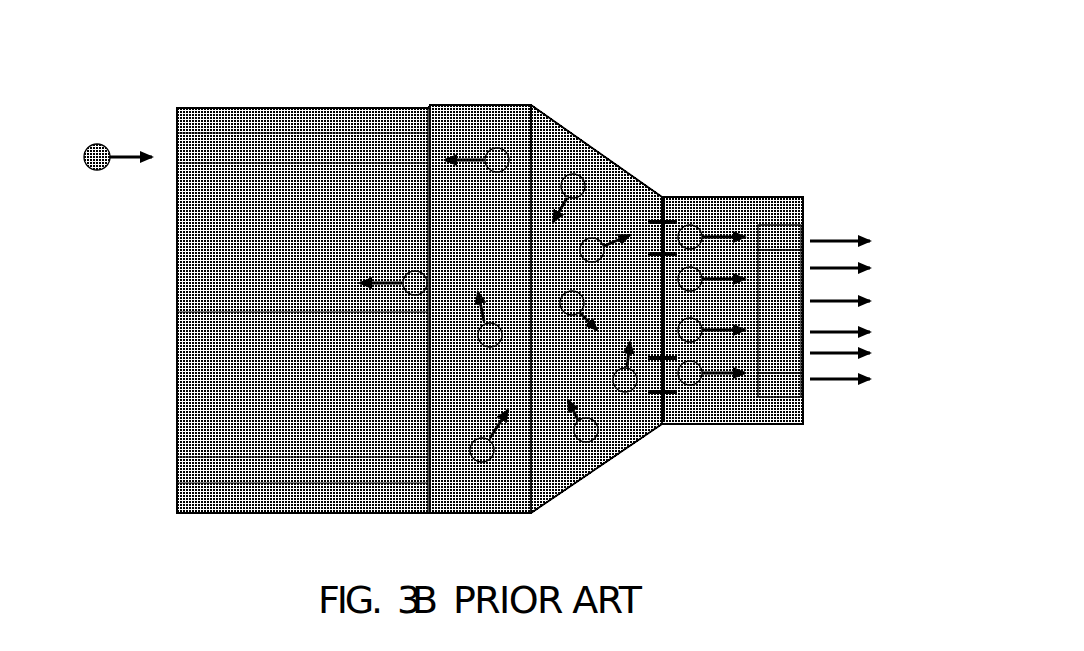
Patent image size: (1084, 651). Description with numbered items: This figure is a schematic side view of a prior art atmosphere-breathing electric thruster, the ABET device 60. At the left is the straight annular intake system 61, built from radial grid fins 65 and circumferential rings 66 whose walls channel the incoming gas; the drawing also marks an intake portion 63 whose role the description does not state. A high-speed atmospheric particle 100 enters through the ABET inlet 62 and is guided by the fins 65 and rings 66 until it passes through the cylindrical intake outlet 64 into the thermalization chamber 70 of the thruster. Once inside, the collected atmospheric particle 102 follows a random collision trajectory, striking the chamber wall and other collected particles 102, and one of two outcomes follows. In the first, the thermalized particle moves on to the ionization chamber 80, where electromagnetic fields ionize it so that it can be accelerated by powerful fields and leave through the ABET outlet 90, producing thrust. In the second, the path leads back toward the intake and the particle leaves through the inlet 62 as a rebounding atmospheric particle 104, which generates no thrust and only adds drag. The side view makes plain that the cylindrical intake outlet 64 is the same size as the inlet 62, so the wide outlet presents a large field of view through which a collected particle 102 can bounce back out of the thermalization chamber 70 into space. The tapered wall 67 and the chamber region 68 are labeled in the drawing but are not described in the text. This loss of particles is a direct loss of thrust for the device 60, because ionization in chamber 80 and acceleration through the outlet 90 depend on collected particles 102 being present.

The ABET device 60 is at (931, 62).
The straight annular intake system 61 is at (316, 294).
The ABET inlet 62 is at (175, 262).
The chamber wall 63 is at (262, 108).
The cylindrical intake outlet 64 is at (428, 402).
The radial grid fins 65 is at (375, 205).
The circumferential rings 66 is at (440, 152).
The tapered wall 67 is at (662, 424).
The acceleration chamber 68 is at (690, 410).
The thermalization chamber 70 is at (647, 177).
The ionization chamber 80 is at (738, 197).
The ABET outlet 90 is at (810, 237).
The high-speed atmospheric particle 100 is at (93, 143).
The collected atmospheric particle 102 is at (512, 145).
The rebounding atmospheric particle 104 is at (435, 263).